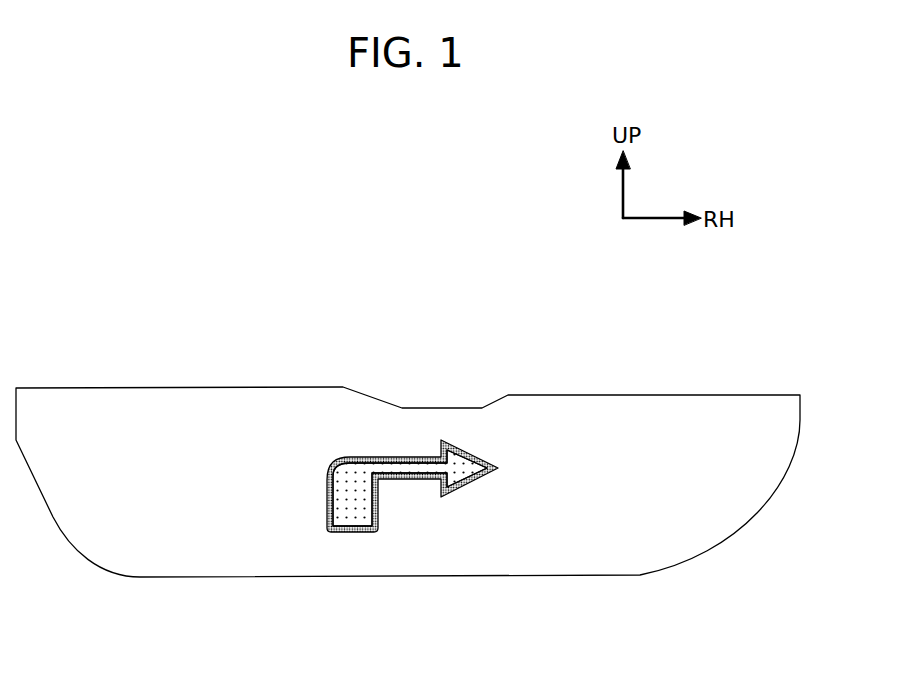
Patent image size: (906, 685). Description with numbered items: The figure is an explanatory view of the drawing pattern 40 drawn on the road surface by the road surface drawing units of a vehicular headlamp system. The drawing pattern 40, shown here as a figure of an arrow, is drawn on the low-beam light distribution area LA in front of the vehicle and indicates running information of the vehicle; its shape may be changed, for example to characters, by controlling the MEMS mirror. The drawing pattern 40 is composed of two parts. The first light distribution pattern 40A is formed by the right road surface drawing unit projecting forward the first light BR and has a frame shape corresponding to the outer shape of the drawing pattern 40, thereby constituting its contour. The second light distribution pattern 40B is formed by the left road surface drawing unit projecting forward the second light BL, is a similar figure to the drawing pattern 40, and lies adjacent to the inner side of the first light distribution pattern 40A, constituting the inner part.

The drawing pattern 40 is at (416, 422).
The first light distribution pattern 40A is at (333, 463).
The second light distribution pattern 40B is at (480, 457).
The first light BR is at (327, 500).
The second light BL is at (495, 477).
The low-beam light distribution area LA is at (275, 577).